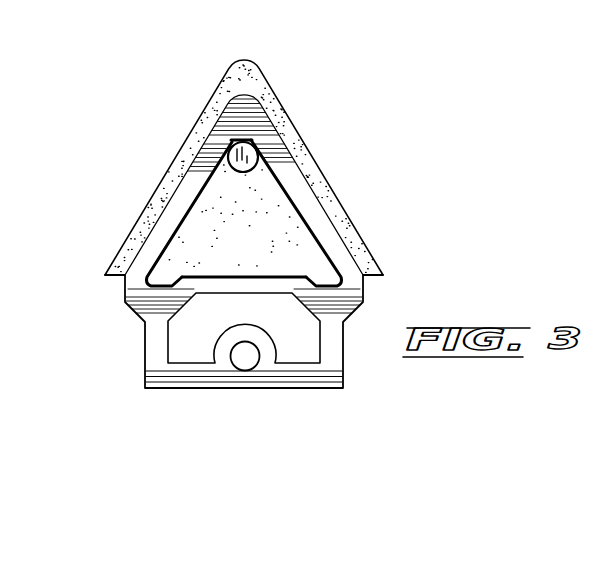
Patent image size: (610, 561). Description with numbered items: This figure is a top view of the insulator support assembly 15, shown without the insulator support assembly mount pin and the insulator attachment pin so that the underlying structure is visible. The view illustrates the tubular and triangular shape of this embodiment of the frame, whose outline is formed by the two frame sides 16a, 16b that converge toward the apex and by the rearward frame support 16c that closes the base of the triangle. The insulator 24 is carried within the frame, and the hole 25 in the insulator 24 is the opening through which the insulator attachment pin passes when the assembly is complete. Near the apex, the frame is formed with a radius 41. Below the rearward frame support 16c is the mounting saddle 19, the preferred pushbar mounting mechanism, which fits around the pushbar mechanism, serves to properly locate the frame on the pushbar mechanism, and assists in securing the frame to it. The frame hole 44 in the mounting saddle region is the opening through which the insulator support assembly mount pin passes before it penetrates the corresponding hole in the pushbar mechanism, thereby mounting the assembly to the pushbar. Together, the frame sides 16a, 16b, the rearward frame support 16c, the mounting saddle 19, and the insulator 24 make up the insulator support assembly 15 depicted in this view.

The connector assembly 15 is at (372, 75).
The frame side 16a is at (183, 207).
The frame side 16b is at (307, 212).
The rearward frame support 16c is at (222, 300).
The mounting saddle 19 is at (150, 362).
The insulator 24 is at (352, 247).
The hole in the insulator 25 is at (260, 153).
The radius in the frame 41 is at (222, 133).
The frame hole 44 is at (245, 364).